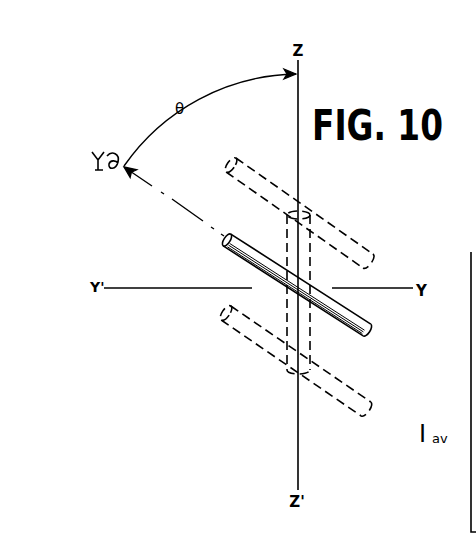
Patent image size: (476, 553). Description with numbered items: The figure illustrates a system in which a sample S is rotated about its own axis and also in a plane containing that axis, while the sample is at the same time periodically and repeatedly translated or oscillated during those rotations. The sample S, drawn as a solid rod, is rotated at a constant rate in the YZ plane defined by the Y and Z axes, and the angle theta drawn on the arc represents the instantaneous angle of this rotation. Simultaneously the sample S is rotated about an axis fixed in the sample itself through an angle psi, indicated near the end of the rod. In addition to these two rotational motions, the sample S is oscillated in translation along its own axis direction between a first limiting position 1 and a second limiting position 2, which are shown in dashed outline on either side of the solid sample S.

The limiting position 1 is at (333, 230).
The limiting position 2 is at (362, 414).
The sample S is at (372, 332).